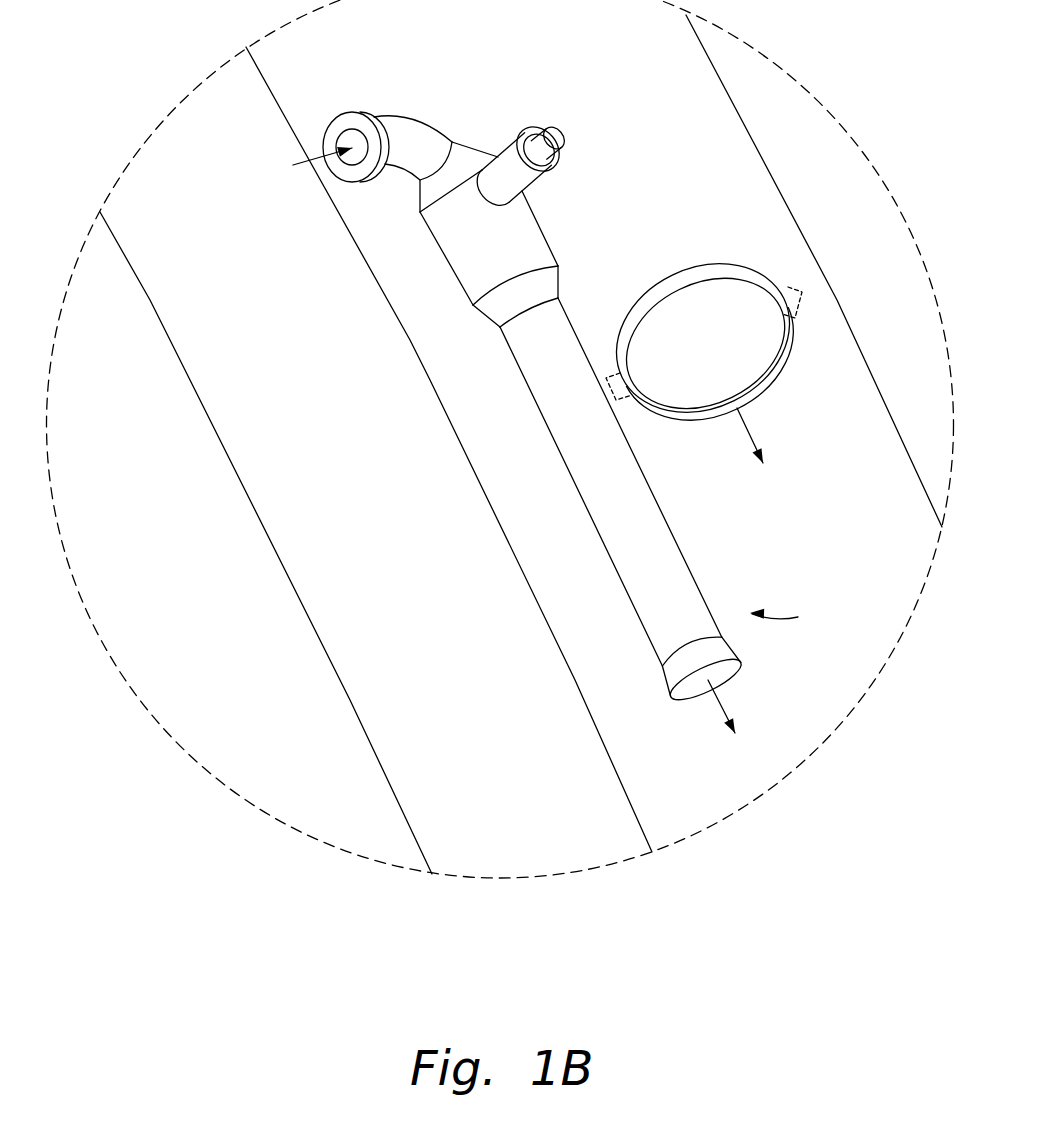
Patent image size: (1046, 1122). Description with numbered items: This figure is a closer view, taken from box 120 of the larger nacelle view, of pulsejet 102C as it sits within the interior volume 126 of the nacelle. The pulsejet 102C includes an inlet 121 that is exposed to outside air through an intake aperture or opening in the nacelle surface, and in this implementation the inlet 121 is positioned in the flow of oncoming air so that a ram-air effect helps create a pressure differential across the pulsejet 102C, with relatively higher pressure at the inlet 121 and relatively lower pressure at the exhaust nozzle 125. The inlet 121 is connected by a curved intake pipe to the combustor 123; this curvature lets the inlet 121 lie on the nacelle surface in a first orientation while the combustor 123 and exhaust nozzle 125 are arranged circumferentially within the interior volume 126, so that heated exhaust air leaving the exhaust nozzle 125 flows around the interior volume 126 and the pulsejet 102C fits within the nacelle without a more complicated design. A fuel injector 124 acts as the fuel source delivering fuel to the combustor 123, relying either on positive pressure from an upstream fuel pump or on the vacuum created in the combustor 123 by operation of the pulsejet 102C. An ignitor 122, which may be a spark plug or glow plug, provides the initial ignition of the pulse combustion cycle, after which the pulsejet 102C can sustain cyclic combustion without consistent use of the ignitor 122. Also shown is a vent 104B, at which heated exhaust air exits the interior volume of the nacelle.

The pulsejet 102C is at (686, 562).
The vent 104B is at (715, 308).
The box 120 is at (448, 513).
The inlet 121 is at (352, 112).
The ignitor 122 is at (548, 126).
The combustor 123 is at (549, 247).
The fuel injector 124 is at (533, 182).
The exhaust nozzle 125 is at (797, 617).
The interior volume 126 is at (858, 483).